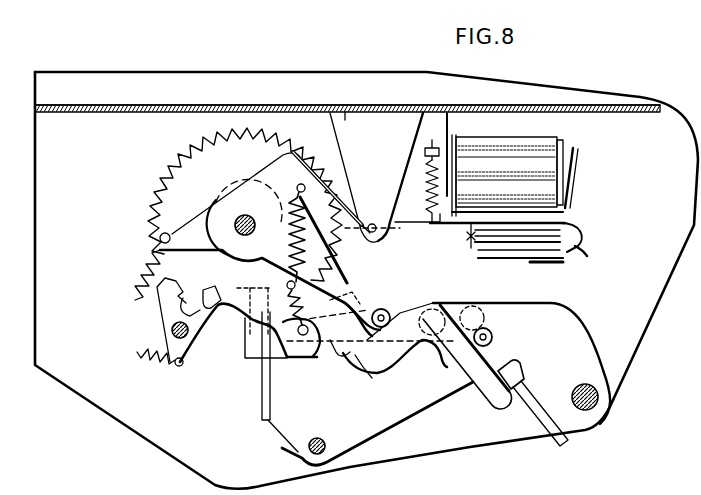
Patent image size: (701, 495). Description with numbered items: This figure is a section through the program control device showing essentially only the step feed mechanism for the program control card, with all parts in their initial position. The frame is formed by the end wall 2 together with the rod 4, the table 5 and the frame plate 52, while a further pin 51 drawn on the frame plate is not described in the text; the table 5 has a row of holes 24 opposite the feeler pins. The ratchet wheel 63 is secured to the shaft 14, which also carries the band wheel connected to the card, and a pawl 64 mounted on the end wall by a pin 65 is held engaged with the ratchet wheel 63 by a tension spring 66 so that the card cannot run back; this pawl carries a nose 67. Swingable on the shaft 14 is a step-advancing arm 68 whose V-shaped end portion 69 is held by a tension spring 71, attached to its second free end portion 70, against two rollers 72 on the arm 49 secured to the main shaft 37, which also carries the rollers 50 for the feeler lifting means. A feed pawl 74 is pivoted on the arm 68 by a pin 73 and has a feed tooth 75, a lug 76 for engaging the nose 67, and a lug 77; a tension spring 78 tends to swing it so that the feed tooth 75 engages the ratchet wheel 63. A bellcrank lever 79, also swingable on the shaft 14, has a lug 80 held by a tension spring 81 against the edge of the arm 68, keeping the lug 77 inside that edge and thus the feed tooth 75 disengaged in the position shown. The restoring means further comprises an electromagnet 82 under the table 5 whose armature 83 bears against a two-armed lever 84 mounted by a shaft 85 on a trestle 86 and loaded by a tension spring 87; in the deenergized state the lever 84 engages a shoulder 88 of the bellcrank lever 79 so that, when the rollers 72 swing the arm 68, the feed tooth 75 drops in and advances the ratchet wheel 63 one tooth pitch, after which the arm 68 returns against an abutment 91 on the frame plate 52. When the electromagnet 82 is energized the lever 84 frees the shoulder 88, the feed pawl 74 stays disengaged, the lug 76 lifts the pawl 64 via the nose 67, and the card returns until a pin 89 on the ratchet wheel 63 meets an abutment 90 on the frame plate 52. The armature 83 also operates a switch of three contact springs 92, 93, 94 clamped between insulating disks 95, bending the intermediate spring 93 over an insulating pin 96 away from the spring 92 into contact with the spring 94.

The frame end wall 2 is at (395, 73).
The rod 4 is at (588, 411).
The table 5 is at (219, 112).
The shaft 14 is at (237, 215).
The holes 24 is at (158, 112).
The main shaft 37 is at (432, 308).
The arm 49 is at (463, 308).
The rollers 50 is at (488, 323).
The pivot pin 51 is at (305, 450).
The frame plate 52 is at (420, 410).
The ratchet wheel 63 is at (178, 163).
The pawl 64 is at (160, 322).
The pin 65 is at (170, 340).
The tension spring 66 is at (160, 370).
The nose 67 is at (210, 296).
The arm 68 is at (343, 368).
The V-shaped end portion 69 is at (446, 350).
The second free end portion 70 is at (161, 211).
The tension spring 71 is at (160, 243).
The rollers 72 is at (388, 318).
The pin 73 is at (365, 372).
The feed pawl 74 is at (261, 396).
The feed tooth 75 is at (289, 343).
The lug 76 is at (216, 332).
The lug 77 is at (346, 284).
The tension spring 78 is at (323, 345).
The bellcrank lever 79 is at (264, 184).
The lug 80 is at (362, 293).
The tension spring 81 is at (308, 233).
The electromagnet 82 is at (505, 158).
The armature 83 is at (576, 167).
The two-armed lever 84 is at (385, 184).
The shaft 85 is at (372, 224).
The trestle 86 is at (345, 112).
The tension spring 87 is at (428, 210).
The shoulder 88 is at (296, 159).
The pin 89 is at (241, 289).
The abutment 90 is at (246, 350).
The abutment 91 is at (534, 373).
The contact spring 92 is at (483, 254).
The contact spring 93 is at (508, 252).
The contact spring 94 is at (537, 260).
The insulating disks 95 is at (586, 247).
The insulating pin 96 is at (465, 238).